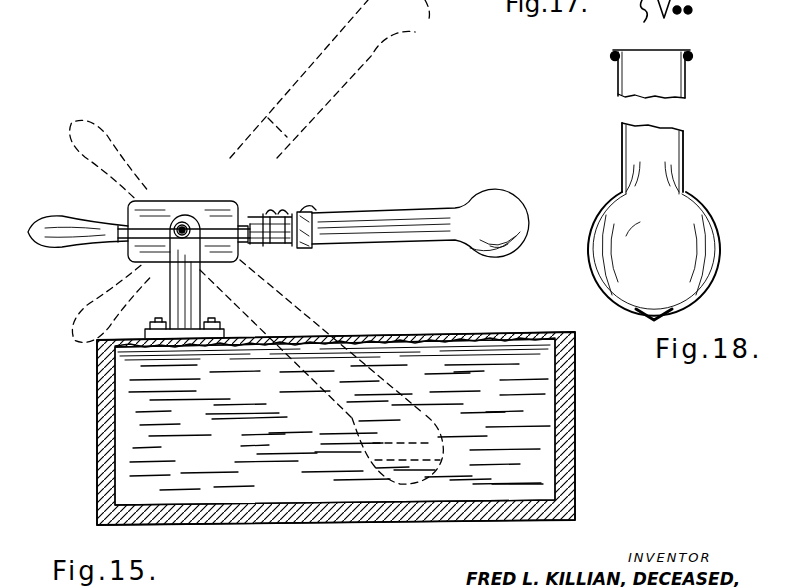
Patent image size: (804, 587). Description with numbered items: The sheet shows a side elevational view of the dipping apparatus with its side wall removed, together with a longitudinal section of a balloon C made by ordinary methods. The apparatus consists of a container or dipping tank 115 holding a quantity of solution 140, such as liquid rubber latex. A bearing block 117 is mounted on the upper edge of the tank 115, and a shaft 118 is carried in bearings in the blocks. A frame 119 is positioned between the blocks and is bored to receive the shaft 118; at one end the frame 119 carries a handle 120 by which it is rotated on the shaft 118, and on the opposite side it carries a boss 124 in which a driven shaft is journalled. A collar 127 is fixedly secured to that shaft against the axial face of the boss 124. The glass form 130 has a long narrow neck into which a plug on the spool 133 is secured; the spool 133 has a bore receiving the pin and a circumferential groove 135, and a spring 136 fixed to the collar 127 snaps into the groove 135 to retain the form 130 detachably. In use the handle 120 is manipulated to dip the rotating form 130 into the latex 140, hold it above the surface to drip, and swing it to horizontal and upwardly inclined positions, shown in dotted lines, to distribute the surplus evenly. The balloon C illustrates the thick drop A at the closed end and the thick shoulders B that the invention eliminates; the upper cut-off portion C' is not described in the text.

In FIG. 15, the dipping tank 115 is at (100, 387).
In FIG. 15, the solution 140 is at (512, 356).
In FIG. 15, the bearing block 117 is at (198, 201).
In FIG. 15, the shaft 118 is at (192, 228).
In FIG. 15, the frame 119 is at (128, 243).
In FIG. 15, the handle 120 is at (50, 225).
In FIG. 15, the boss 124 is at (266, 244).
In FIG. 15, the collar 127 is at (288, 246).
In FIG. 15, the form 130 is at (500, 192).
In FIG. 15, the spool 133 is at (313, 248).
In FIG. 15, the groove 135 is at (312, 214).
In FIG. 15, the spring 136 is at (282, 212).
In FIG. 18, the thick drop A is at (650, 322).
In FIG. 18, the thick shoulders B is at (612, 199).
In FIG. 18, the balloon C is at (679, 158).
In FIG. 18, the cut-off top portion C' is at (666, 77).